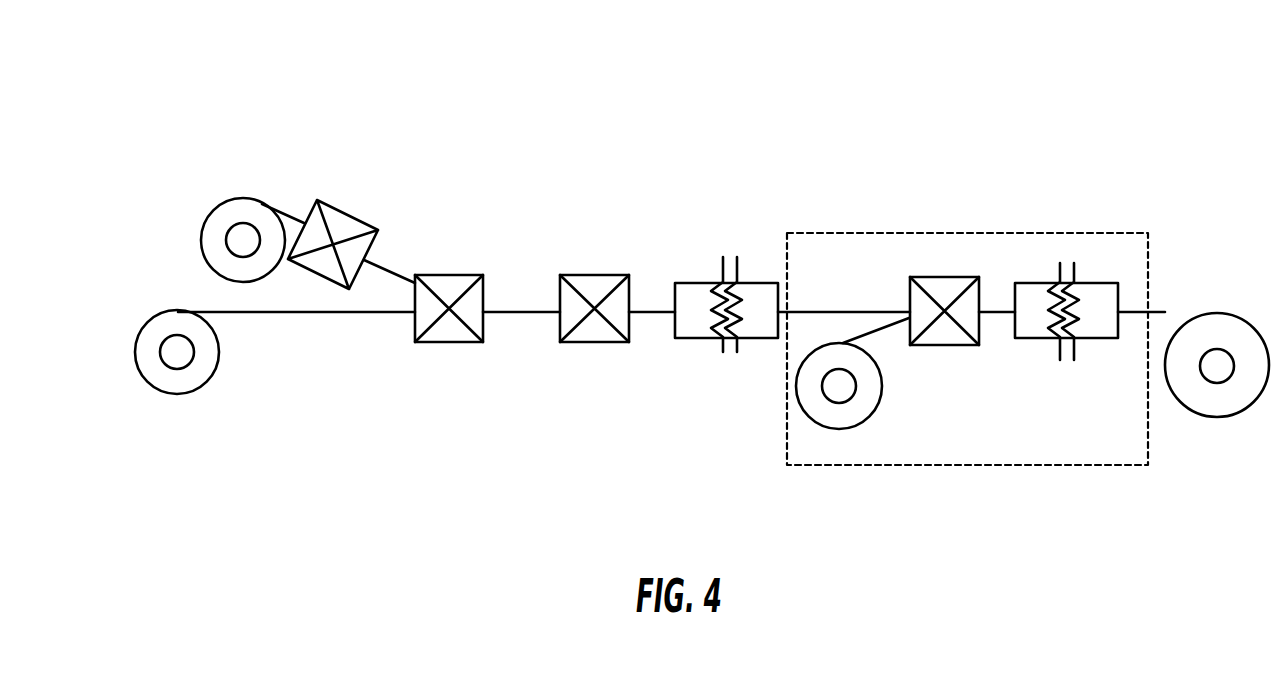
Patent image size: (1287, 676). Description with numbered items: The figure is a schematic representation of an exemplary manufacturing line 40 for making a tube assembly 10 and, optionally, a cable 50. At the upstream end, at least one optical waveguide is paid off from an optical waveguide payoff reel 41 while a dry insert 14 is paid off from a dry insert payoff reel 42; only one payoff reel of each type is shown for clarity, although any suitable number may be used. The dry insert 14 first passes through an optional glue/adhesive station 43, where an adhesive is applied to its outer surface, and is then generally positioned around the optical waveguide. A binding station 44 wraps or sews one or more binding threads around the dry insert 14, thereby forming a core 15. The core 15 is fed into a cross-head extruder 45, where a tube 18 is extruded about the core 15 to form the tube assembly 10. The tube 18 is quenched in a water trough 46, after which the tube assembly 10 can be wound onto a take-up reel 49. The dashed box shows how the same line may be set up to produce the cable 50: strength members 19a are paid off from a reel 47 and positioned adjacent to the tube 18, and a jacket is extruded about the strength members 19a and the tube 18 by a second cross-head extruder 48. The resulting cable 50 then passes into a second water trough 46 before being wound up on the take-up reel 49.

The manufacturing line 40 is at (255, 142).
The optical waveguide payoff reel 41 is at (177, 369).
The dry insert payoff reel 42 is at (220, 206).
The dry insert 14 is at (300, 220).
The glue/adhesive station 43 is at (353, 217).
The tube 18 is at (264, 313).
The binding station 44 is at (447, 275).
The core 15 is at (517, 313).
The cross-head extruder 45 is at (597, 275).
The tube assembly 10 is at (648, 312).
The water trough 46 is at (687, 342).
The cross-head extruder 48 is at (916, 278).
The reel 47 is at (863, 418).
The strength members 19a is at (875, 331).
The cable 50 is at (995, 313).
The take-up reel 49 is at (1219, 417).